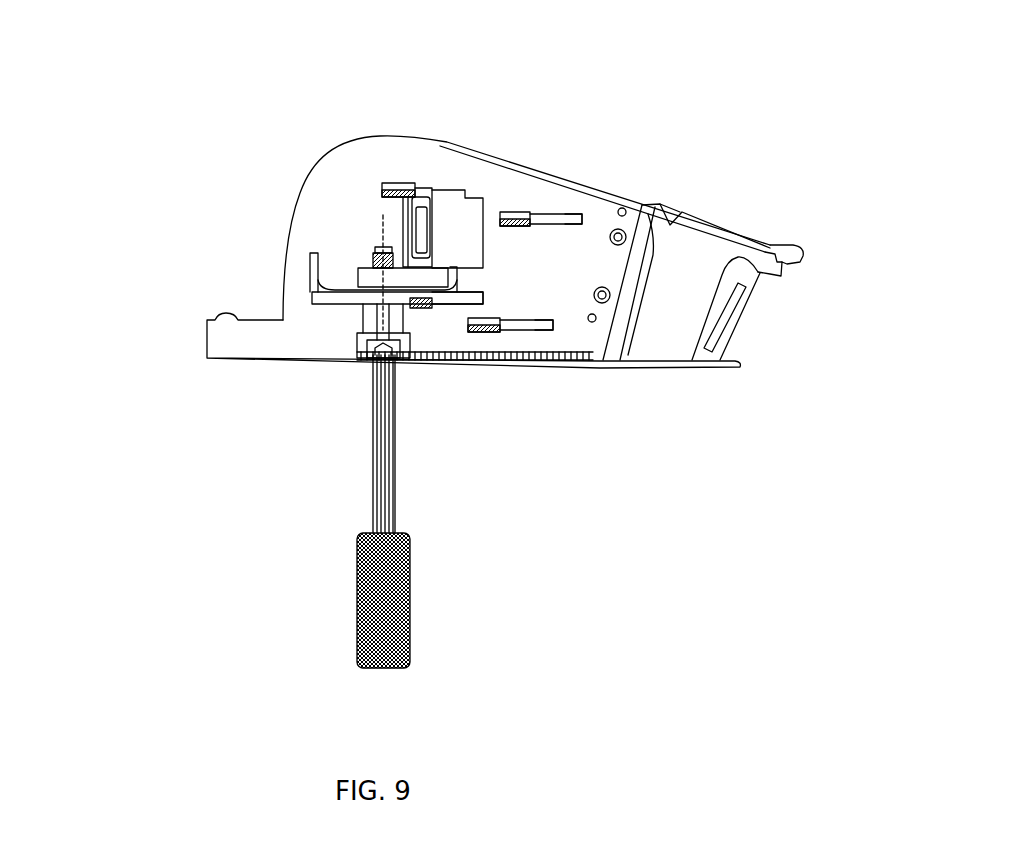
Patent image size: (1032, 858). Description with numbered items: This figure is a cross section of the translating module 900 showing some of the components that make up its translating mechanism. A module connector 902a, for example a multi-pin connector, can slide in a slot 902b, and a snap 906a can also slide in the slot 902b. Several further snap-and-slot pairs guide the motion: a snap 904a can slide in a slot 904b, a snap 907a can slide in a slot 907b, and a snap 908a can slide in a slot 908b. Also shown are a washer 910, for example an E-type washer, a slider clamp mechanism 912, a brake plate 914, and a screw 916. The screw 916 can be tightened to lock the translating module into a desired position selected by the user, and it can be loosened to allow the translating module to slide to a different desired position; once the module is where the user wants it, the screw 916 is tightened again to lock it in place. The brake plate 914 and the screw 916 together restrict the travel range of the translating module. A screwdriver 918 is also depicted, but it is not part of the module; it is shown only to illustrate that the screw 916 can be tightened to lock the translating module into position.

The translating module 900 is at (388, 135).
The module connector 902a is at (435, 191).
The slot 902b is at (460, 210).
The snap 904a is at (517, 209).
The slot 904b is at (570, 218).
The snap 906a is at (386, 181).
The snap 907a is at (421, 311).
The slot 907b is at (447, 307).
The snap 908a is at (488, 336).
The slot 908b is at (545, 324).
The washer 910 is at (366, 252).
The slider clamp mechanism 912 is at (364, 285).
The brake plate 914 is at (344, 302).
The screw 916 is at (394, 322).
The screwdriver 918 is at (412, 652).